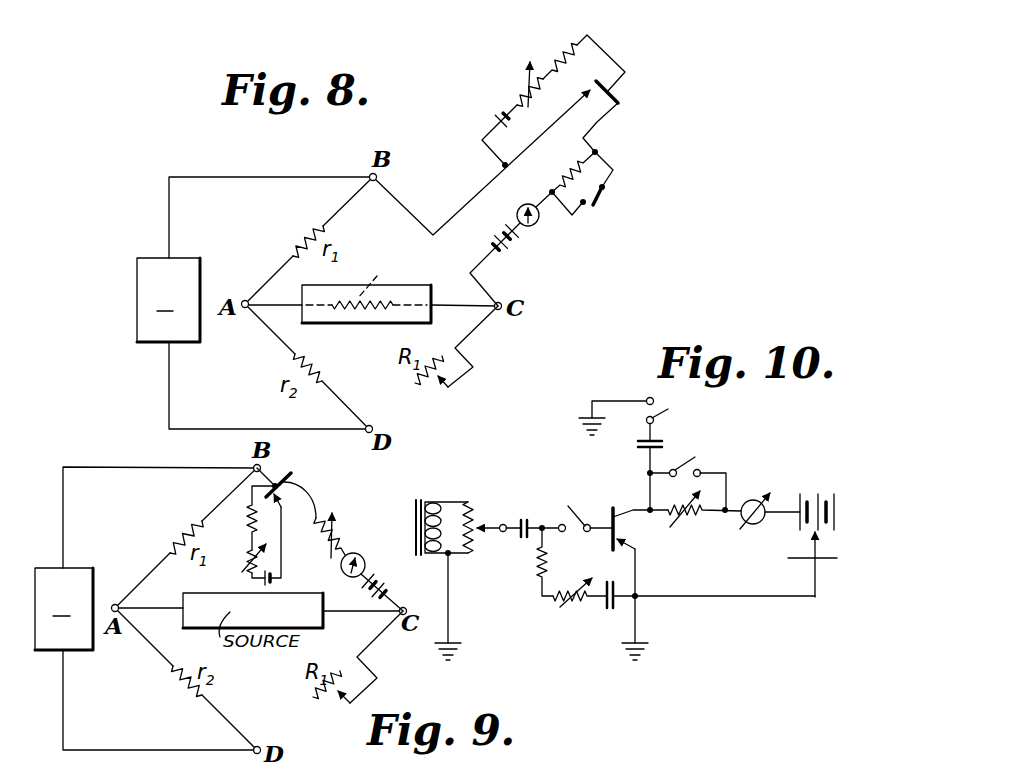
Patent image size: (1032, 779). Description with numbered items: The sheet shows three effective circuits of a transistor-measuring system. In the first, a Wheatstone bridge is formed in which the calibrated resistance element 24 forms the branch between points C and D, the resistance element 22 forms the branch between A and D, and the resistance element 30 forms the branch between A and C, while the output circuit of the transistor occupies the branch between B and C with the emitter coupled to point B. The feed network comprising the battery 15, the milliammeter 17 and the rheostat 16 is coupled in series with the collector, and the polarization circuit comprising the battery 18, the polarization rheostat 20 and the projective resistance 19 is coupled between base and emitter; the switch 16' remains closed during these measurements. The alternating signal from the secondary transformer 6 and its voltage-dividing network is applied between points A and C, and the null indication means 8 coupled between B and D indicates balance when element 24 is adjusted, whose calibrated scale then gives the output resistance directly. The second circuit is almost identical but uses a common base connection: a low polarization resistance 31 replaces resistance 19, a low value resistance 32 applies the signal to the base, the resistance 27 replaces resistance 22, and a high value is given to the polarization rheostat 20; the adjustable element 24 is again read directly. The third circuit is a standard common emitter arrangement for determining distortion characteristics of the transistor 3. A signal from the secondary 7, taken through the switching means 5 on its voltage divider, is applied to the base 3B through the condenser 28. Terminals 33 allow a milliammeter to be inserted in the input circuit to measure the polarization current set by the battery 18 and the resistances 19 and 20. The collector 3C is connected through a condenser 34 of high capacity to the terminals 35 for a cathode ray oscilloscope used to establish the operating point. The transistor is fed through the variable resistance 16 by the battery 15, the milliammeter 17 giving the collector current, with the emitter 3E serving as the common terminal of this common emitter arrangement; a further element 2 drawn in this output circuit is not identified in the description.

In FIG. 10, the temperature sensing element 2 is at (820, 552).
In FIG. 10, the transistor 3 is at (610, 510).
In FIG. 9, the base 3B is at (288, 480).
In FIG. 9, the collector 3C is at (307, 495).
In FIG. 9, the emitter 3E is at (285, 548).
In FIG. 10, the switching means 5 is at (491, 523).
In FIG. 8, the secondary transformer 6 is at (362, 326).
In FIG. 10, the secondary 7 is at (415, 503).
In FIG. 8, the null indication means 8 is at (147, 270).
In FIG. 9, the null indication means 8 is at (75, 633).
In FIG. 8, the battery 15 is at (510, 252).
In FIG. 9, the battery 15 is at (387, 585).
In FIG. 10, the battery 15 is at (826, 493).
In FIG. 8, the rheostat 16 is at (566, 172).
In FIG. 9, the rheostat 16 is at (349, 535).
In FIG. 10, the rheostat 16 is at (704, 522).
In FIG. 8, the switch 16' is at (605, 183).
In FIG. 10, the switch 16' is at (695, 471).
In FIG. 8, the milliammeter 17 is at (540, 222).
In FIG. 9, the milliammeter 17 is at (365, 558).
In FIG. 10, the milliammeter 17 is at (753, 497).
In FIG. 8, the battery 18 is at (494, 119).
In FIG. 9, the battery 18 is at (277, 580).
In FIG. 10, the battery 18 is at (607, 612).
In FIG. 8, the projective resistance 19 is at (556, 58).
In FIG. 10, the projective resistance 19 is at (537, 573).
In FIG. 8, the polarization rheostat 20 is at (518, 94).
In FIG. 9, the polarization rheostat 20 is at (240, 568).
In FIG. 10, the polarization rheostat 20 is at (556, 603).
In FIG. 8, the resistance element 22 is at (315, 367).
In FIG. 8, the calibrated resistance element 24 is at (416, 387).
In FIG. 9, the calibrated resistance element 24 is at (312, 698).
In FIG. 9, the resistance 27 is at (180, 688).
In FIG. 10, the condenser 28 is at (523, 517).
In FIG. 8, the resistance element 30 is at (303, 233).
In FIG. 9, the low polarization resistance 31 is at (247, 519).
In FIG. 9, the low value resistance 32 is at (183, 531).
In FIG. 10, the terminals 33 is at (567, 514).
In FIG. 10, the condenser 34 is at (643, 448).
In FIG. 10, the terminals 35 is at (655, 401).